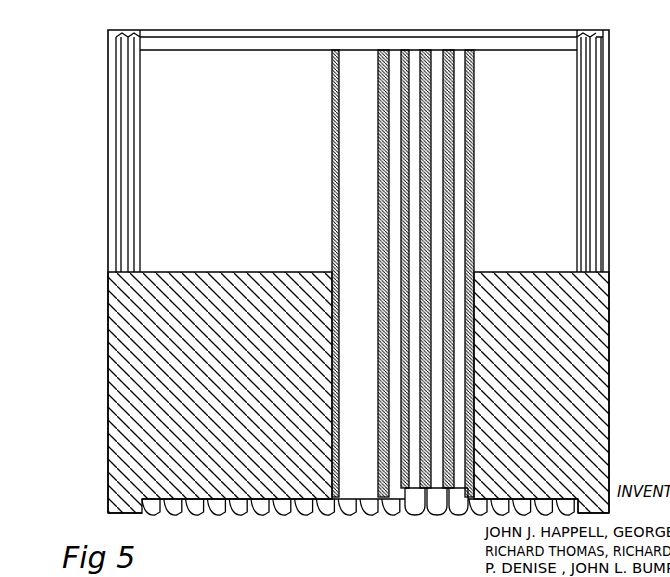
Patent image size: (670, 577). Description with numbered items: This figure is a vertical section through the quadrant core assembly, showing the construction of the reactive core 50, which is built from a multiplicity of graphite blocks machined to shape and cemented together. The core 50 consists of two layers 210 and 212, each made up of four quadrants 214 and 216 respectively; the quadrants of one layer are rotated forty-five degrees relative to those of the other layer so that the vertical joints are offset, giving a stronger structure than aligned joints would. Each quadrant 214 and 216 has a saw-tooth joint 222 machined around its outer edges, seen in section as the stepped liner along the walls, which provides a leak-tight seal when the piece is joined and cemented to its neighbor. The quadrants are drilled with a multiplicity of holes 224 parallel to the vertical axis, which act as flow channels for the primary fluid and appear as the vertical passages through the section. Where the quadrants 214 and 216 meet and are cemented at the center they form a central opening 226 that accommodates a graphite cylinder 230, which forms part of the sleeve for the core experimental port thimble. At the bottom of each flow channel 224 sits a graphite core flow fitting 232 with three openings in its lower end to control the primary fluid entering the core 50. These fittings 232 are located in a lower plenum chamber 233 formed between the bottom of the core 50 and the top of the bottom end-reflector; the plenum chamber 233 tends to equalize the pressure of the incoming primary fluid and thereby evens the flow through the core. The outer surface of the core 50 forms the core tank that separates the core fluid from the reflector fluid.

The reactive core 50 is at (346, 392).
The layer 210 is at (611, 113).
The layer 212 is at (612, 350).
The quadrant 214 is at (609, 92).
The quadrant 216 is at (611, 332).
The saw-tooth joint 222 is at (596, 55).
The holes 224 is at (440, 80).
The central opening 226 is at (388, 72).
The graphite cylinder 230 is at (339, 68).
The graphite core flow fitting 232 is at (404, 516).
The lower plenum chamber 233 is at (158, 503).